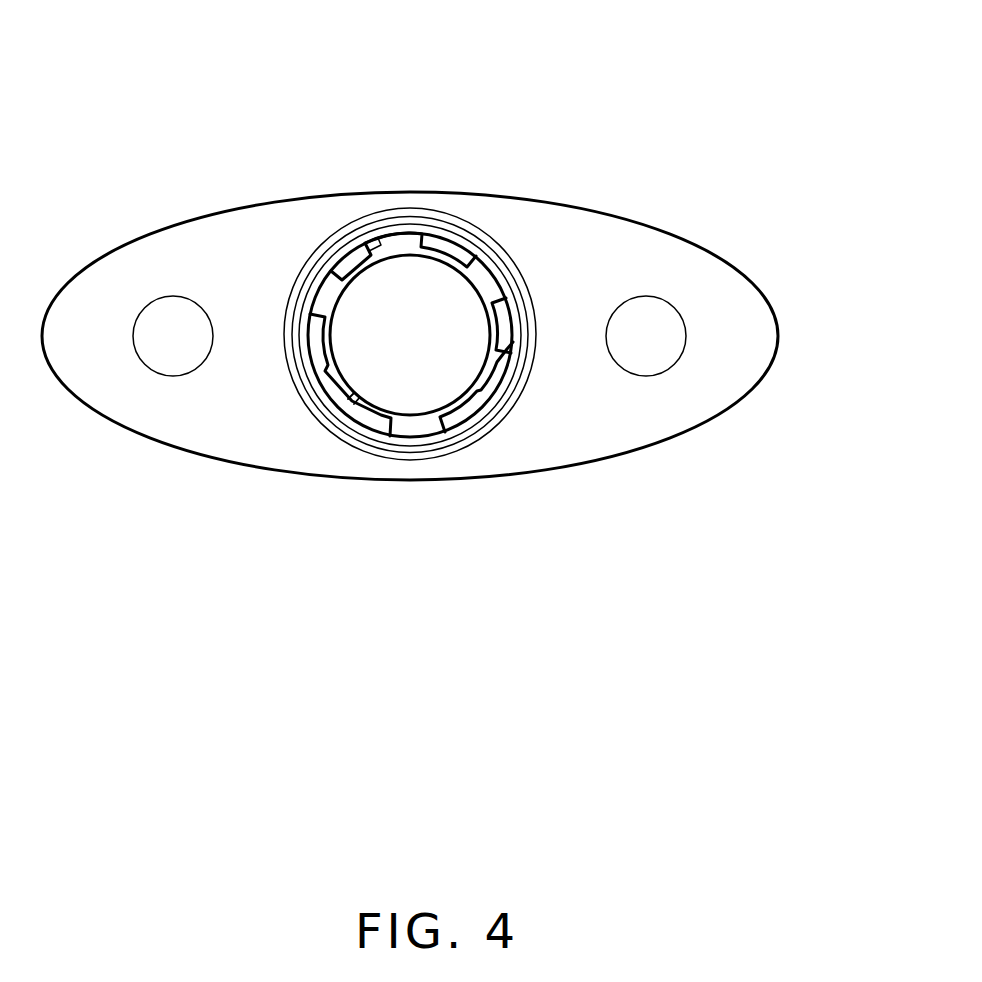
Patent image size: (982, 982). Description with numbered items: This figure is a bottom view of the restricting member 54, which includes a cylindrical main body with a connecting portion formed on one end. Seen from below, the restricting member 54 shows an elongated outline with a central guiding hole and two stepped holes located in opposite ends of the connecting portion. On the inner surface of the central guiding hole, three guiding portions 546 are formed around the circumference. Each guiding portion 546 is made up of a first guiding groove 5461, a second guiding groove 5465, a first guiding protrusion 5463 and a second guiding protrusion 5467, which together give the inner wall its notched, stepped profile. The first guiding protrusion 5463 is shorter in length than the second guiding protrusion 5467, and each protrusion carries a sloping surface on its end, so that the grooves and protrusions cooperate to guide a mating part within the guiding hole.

The restricting member 54 is at (707, 170).
The guiding portion 546 is at (411, 234).
The first guiding groove 5461 is at (502, 273).
The first guiding protrusion 5463 is at (448, 252).
The second guiding groove 5465 is at (391, 237).
The second guiding protrusion 5467 is at (310, 262).